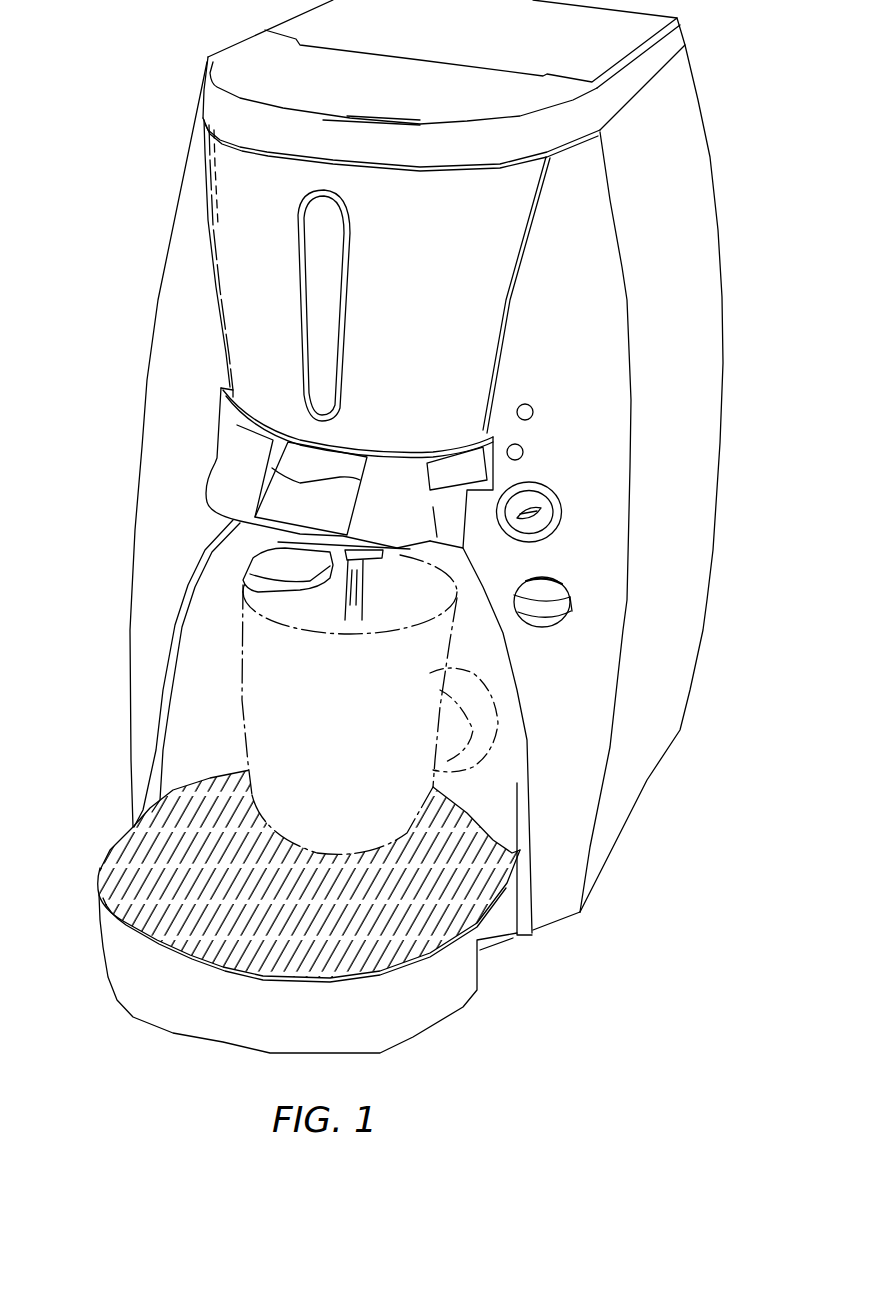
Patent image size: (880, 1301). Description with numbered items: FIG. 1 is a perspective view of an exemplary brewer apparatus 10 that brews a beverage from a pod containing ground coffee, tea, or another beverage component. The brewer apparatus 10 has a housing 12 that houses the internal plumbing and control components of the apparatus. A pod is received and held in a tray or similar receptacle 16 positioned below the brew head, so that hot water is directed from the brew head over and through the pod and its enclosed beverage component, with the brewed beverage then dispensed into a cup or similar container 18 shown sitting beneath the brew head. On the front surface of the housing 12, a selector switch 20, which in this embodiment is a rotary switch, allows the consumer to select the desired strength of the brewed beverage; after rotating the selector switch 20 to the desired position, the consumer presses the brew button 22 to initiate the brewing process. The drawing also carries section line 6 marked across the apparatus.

The brewer apparatus 10 is at (106, 56).
The housing 12 is at (693, 160).
The tray or similar receptacle 16 is at (222, 416).
The cup or similar container 18 is at (245, 710).
The selector switch 20 is at (572, 614).
The brew button 22 is at (547, 510).
The section line 6-6 (sight gauge) 6 is at (372, 340).